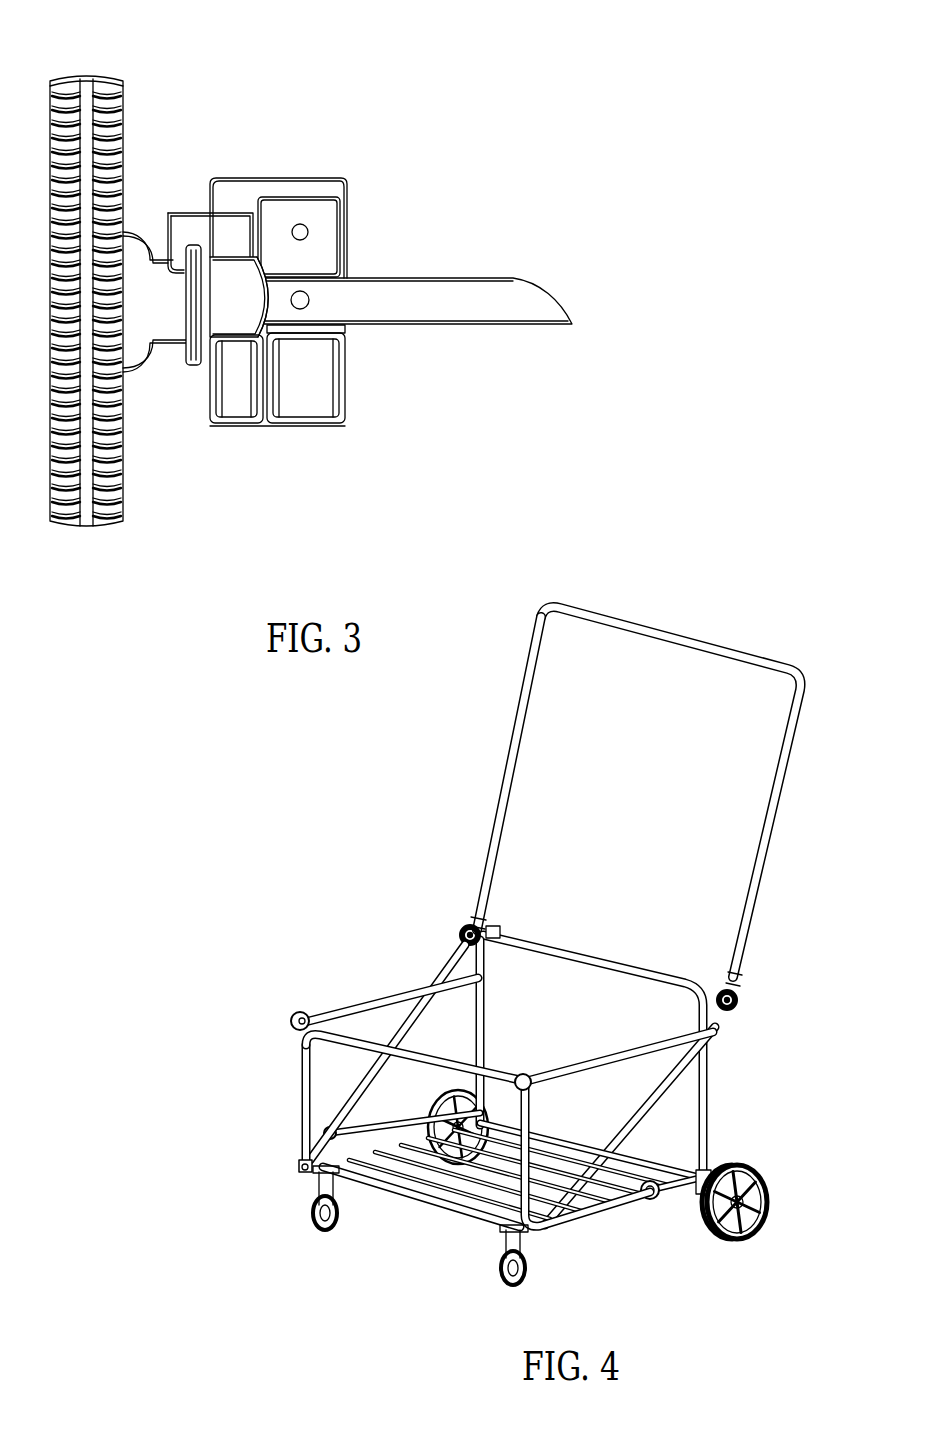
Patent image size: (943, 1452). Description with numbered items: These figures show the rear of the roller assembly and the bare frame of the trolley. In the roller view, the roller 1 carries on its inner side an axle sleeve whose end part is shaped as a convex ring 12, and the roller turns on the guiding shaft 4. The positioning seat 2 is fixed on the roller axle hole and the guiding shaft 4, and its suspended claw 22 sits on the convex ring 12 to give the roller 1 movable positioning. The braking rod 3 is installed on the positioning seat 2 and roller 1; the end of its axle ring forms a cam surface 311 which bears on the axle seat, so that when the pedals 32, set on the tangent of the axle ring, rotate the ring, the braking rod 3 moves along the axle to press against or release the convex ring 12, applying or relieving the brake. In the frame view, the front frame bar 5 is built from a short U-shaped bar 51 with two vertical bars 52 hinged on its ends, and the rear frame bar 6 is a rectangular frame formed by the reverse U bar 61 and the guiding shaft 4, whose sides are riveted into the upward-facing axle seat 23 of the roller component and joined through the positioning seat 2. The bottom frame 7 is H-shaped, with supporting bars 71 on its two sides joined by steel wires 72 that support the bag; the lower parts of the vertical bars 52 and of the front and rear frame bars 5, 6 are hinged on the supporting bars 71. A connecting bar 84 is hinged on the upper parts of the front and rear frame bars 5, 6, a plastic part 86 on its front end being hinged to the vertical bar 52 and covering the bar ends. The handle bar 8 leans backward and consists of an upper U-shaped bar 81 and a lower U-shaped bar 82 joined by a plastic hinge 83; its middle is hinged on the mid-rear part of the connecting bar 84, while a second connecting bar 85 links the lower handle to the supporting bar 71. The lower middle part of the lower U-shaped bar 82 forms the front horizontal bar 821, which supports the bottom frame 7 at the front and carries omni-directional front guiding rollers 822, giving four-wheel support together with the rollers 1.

In FIG. 3, the roller 1 is at (119, 74).
In FIG. 4, the roller 1 is at (748, 1160).
In FIG. 3, the positioning seat 2 is at (314, 194).
In FIG. 3, the braking rod 3 is at (224, 255).
In FIG. 3, the guiding shaft 4 is at (518, 276).
In FIG. 4, the guiding shaft 4 is at (683, 1192).
In FIG. 4, the front frame bar 5 is at (366, 1099).
In FIG. 4, the rear frame bar 6 is at (592, 946).
In FIG. 4, the bottom frame 7 is at (648, 1156).
In FIG. 4, the handle bar 8 is at (767, 896).
In FIG. 3, the convex ring 12 is at (188, 367).
In FIG. 3, the suspended claw 22 is at (185, 214).
In FIG. 4, the axle seat 23 is at (710, 1168).
In FIG. 3, the pedals 32 is at (290, 171).
In FIG. 4, the short U-shaped bar 51 is at (342, 1043).
In FIG. 4, the vertical bar 52 is at (298, 1118).
In FIG. 4, the reverse U bar 61 is at (499, 924).
In FIG. 4, the supporting bar 71 is at (300, 1170).
In FIG. 4, the steel wire 72 is at (573, 1142).
In FIG. 4, the upper U-shaped bar 81 is at (492, 812).
In FIG. 4, the lower U-shaped bar 82 is at (437, 966).
In FIG. 4, the plastic hinge 83 is at (453, 926).
In FIG. 4, the connecting bar 84 is at (372, 1000).
In FIG. 4, the connecting bar 85 is at (373, 1121).
In FIG. 4, the plastic part 86 is at (290, 1012).
In FIG. 3, the cam surface 311 is at (273, 302).
In FIG. 4, the front horizontal bar 821 is at (430, 1205).
In FIG. 4, the front guiding roller 822 is at (490, 1256).